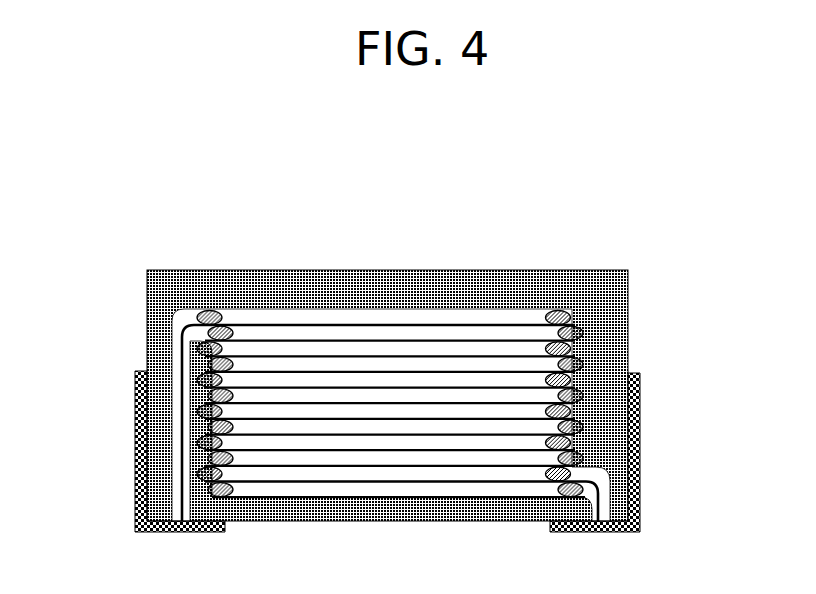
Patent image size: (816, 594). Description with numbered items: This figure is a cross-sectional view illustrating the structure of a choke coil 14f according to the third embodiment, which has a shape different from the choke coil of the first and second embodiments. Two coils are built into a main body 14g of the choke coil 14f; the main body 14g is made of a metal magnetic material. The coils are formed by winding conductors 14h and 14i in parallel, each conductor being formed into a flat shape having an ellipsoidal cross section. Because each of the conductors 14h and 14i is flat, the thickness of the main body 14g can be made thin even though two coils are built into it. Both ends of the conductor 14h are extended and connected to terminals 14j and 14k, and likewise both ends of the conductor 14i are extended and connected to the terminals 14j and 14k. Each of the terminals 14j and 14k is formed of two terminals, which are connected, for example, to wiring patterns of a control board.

The choke coil 14f is at (397, 247).
The main body 14g is at (476, 282).
The conductor 14h is at (568, 320).
The conductor 14i is at (585, 335).
The terminal 14j is at (135, 472).
The terminal 14k is at (640, 493).